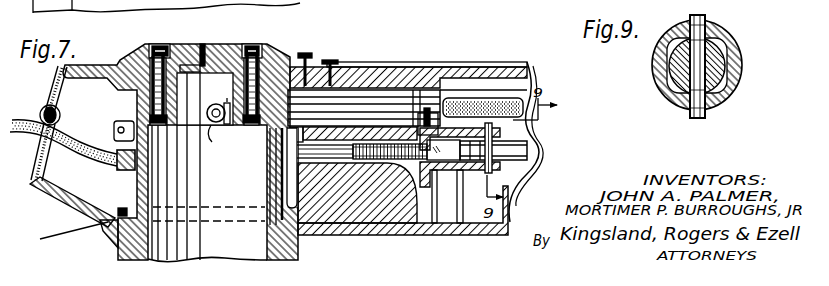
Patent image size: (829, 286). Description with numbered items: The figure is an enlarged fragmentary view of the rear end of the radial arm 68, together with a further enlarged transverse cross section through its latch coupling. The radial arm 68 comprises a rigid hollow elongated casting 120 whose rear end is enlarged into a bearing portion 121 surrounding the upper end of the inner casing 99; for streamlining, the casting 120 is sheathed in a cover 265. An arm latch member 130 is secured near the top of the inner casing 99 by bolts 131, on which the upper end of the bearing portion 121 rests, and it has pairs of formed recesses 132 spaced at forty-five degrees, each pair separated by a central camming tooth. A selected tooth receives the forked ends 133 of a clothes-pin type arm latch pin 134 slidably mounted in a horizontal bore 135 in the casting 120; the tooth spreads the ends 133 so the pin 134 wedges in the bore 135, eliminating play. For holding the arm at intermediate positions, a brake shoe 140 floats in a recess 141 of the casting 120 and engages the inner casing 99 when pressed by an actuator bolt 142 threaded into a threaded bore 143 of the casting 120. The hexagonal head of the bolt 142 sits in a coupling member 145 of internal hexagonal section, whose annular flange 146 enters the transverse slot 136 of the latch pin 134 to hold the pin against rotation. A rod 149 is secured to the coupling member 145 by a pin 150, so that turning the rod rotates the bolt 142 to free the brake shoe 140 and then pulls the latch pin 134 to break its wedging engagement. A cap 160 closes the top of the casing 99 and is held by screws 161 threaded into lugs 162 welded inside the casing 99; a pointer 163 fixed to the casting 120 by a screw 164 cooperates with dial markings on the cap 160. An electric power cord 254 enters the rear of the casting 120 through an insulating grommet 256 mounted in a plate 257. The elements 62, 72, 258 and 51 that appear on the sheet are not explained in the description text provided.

In FIG. 7, the upper frame member 62 is at (95, 5).
In FIG. 7, the upper frame member 72 is at (153, 4).
In FIG. 7, the screws 161 is at (143, 52).
In FIG. 7, the cap 160 is at (228, 43).
In FIG. 7, the lugs 162 is at (143, 105).
In FIG. 7, the pointer 163 is at (289, 56).
In FIG. 7, the screw 164 is at (314, 60).
In FIG. 7, the actuator bolt 142 is at (360, 88).
In FIG. 7, the horizontal bore 135 is at (398, 70).
In FIG. 7, the transverse slot 136 is at (427, 108).
In FIG. 7, the arm latch pin 134 is at (438, 98).
In FIG. 7, the cover 265 is at (478, 63).
In FIG. 7, the electric power cord 254 is at (89, 160).
In FIG. 7, the casting 120 is at (116, 228).
In FIG. 7, the link rod 258 is at (60, 78).
In FIG. 7, the grommet 256 is at (44, 116).
In FIG. 7, the knob 51 is at (313, 118).
In FIG. 7, the arm latch member 130 is at (270, 130).
In FIG. 7, the bolts 131 is at (211, 140).
In FIG. 7, the forked ends 133 is at (273, 142).
In FIG. 7, the recesses 132 is at (270, 160).
In FIG. 7, the bearing portion 121 is at (267, 247).
In FIG. 7, the inner casing 99 is at (118, 251).
In FIG. 7, the recess 141 is at (362, 243).
In FIG. 7, the brake shoe 140 is at (297, 227).
In FIG. 7, the threaded bore 143 is at (380, 160).
In FIG. 7, the annular flange 146 is at (434, 195).
In FIG. 7, the coupling member 145 is at (460, 176).
In FIG. 9, the coupling member 145 is at (728, 34).
In FIG. 7, the rod 149 is at (527, 152).
In FIG. 9, the rod 149 is at (713, 63).
In FIG. 7, the pin 150 is at (493, 178).
In FIG. 9, the pin 150 is at (705, 117).
In FIG. 7, the radial arm 68 is at (519, 204).
In FIG. 7, the plate 257 is at (100, 220).